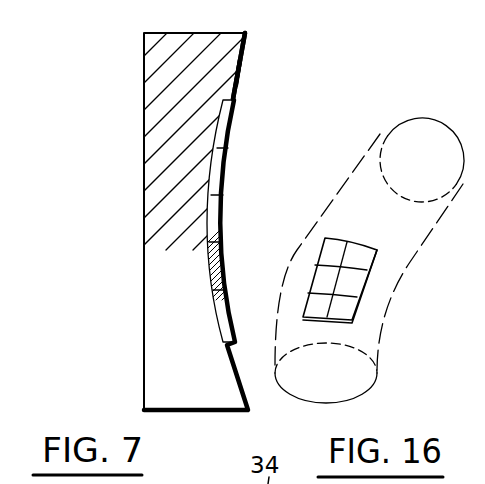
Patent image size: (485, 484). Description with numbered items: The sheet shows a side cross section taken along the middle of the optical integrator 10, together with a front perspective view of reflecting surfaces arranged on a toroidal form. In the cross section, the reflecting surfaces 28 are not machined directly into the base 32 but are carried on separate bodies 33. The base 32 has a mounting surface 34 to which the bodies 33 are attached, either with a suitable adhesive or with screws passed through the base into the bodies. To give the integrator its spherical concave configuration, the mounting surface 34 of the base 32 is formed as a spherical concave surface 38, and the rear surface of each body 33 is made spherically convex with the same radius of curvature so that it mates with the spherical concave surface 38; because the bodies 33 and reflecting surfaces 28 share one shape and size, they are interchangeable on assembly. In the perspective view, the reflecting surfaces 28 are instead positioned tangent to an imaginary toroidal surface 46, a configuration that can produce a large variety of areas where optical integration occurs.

In FIG. 7, the optical integrator 10 is at (105, 159).
In FIG. 7, the reflecting surfaces 28 is at (233, 130).
In FIG. 16, the reflecting surfaces 28 is at (363, 265).
In FIG. 7, the base 32 is at (203, 69).
In FIG. 7, the bodies 33 is at (221, 122).
In FIG. 7, the mounting surface 34 is at (246, 43).
In FIG. 7, the spherical concave surface 38 is at (236, 77).
In FIG. 16, the imaginary toroidal surface 46 is at (399, 222).